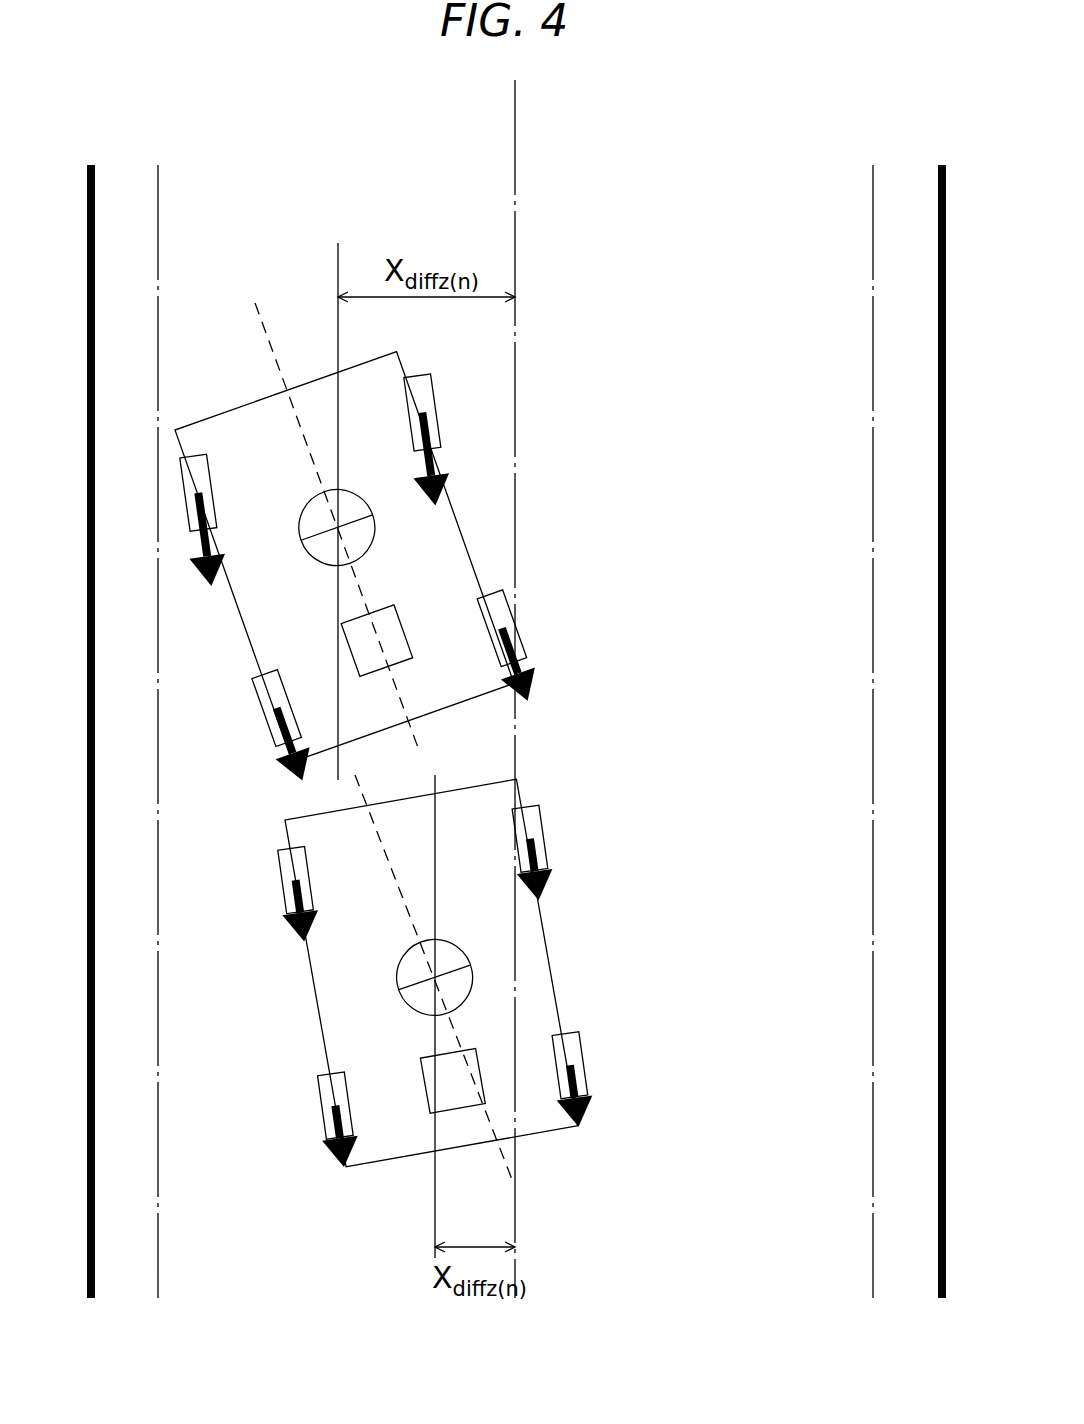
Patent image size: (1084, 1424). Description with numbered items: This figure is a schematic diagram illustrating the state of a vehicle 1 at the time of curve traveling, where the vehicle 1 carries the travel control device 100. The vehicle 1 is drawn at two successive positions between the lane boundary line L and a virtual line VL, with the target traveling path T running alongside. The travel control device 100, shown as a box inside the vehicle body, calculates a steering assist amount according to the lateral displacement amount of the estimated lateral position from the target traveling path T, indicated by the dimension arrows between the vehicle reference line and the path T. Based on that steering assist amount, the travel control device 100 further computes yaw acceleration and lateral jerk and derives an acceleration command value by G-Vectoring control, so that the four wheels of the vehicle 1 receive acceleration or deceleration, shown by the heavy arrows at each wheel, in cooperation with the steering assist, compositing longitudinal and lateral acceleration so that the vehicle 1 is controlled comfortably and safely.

The vehicle 1 is at (219, 405).
The travel control device 100 is at (405, 622).
The lane boundary line L is at (87, 196).
The virtual line VL is at (158, 230).
The target traveling path T is at (516, 137).